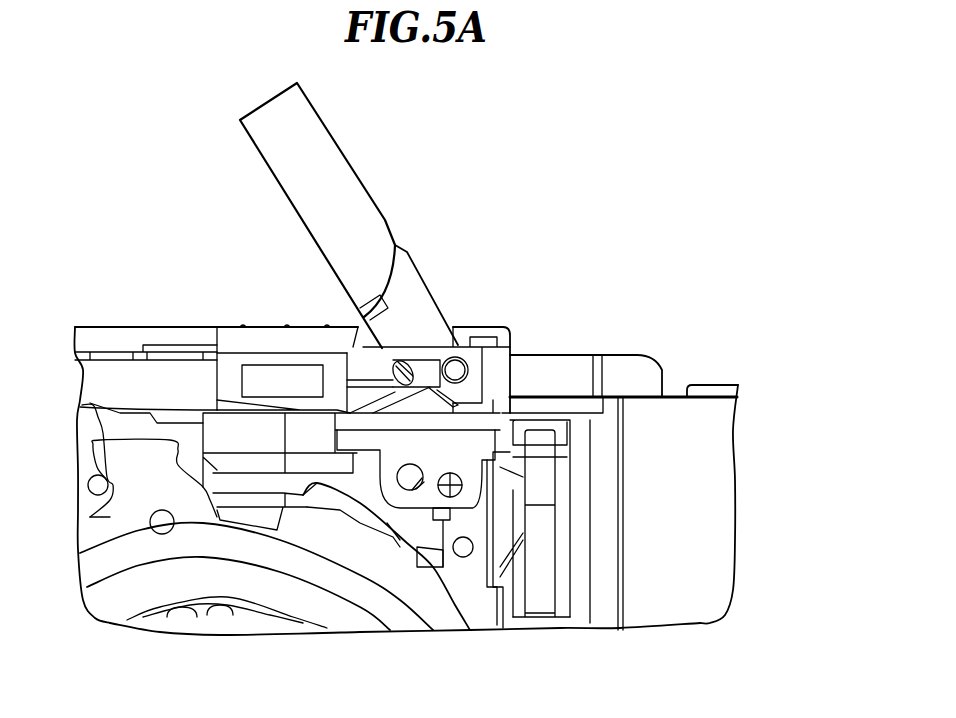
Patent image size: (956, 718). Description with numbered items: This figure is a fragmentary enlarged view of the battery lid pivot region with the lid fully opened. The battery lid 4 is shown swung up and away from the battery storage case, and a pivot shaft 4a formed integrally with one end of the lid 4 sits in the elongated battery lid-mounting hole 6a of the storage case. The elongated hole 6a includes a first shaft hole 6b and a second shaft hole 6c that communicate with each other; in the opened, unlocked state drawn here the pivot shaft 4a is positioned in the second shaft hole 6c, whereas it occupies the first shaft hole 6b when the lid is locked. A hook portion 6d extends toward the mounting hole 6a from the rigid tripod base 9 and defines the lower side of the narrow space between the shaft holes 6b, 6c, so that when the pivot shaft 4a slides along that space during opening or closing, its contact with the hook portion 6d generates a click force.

The battery lid 4 is at (307, 208).
The pivot shaft 4a is at (457, 347).
The battery lid-mounting hole 6a is at (427, 348).
The first shaft hole 6b is at (402, 348).
The second shaft hole 6c is at (468, 372).
The hook portion 6d is at (440, 400).
The tripod base 9 is at (233, 337).